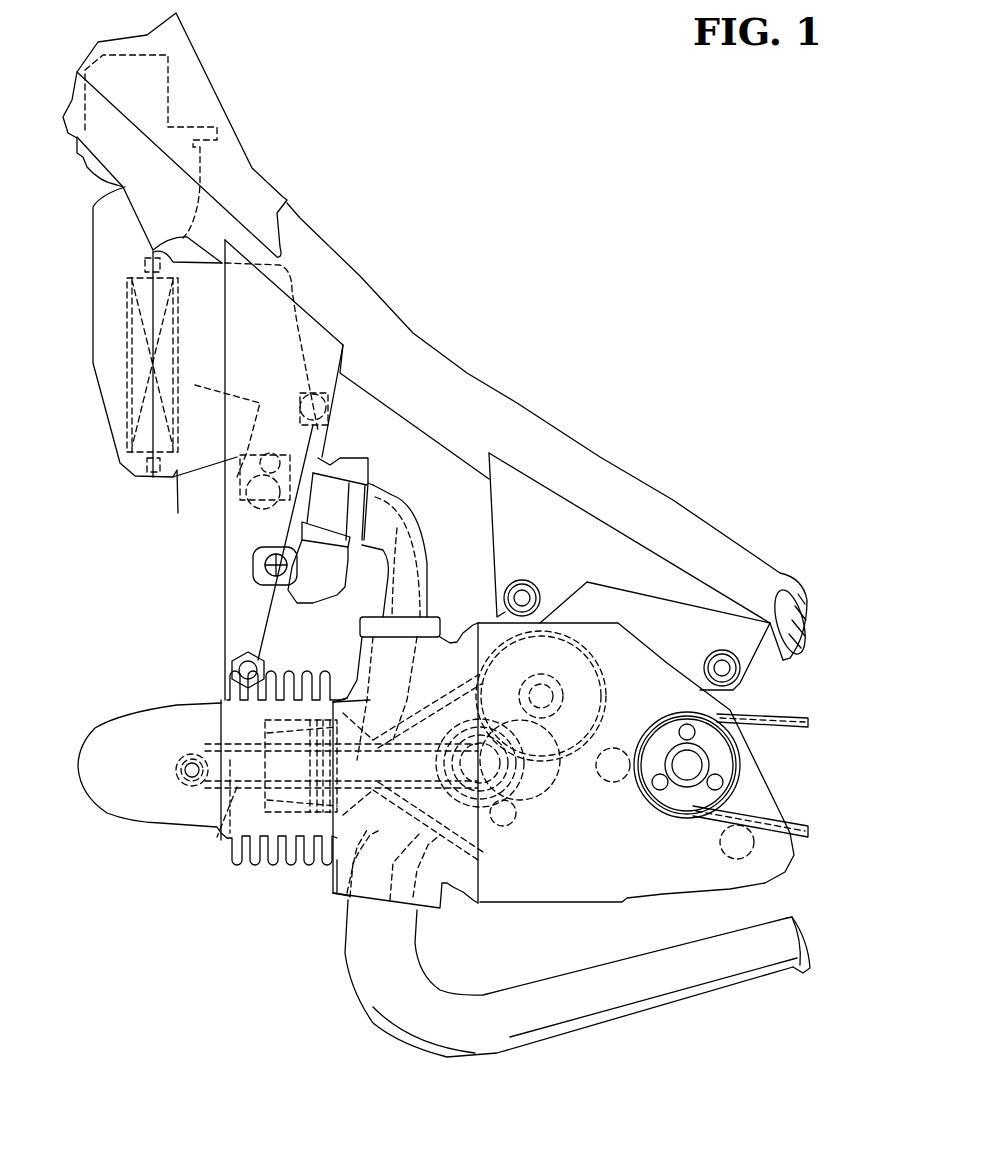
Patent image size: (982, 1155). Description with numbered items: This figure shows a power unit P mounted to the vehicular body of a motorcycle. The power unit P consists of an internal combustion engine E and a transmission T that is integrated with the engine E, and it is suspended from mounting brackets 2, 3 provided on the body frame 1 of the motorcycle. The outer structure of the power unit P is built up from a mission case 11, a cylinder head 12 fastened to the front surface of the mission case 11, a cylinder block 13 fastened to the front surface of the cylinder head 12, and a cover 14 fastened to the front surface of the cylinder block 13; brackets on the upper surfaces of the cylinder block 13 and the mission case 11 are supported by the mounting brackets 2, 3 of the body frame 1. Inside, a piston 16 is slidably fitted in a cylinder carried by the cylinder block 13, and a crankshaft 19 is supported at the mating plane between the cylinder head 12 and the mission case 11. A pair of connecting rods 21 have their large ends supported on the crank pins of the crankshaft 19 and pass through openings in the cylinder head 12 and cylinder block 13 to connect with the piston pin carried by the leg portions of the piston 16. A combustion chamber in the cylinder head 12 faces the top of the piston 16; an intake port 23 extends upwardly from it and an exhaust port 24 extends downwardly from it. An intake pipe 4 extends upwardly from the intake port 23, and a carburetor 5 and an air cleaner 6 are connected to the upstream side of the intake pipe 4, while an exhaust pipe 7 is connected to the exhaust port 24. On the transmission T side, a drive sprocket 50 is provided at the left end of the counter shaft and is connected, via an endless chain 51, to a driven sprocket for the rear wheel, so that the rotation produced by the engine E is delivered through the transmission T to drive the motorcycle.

The body frame 1 is at (413, 333).
The mounting bracket 2 is at (250, 635).
The mounting bracket 3 is at (620, 548).
The intake pipe 4 is at (418, 552).
The carburetor 5 is at (340, 455).
The air cleaner 6 is at (92, 396).
The exhaust pipe 7 is at (597, 1000).
The mission case 11 is at (628, 673).
The cylinder head 12 is at (457, 653).
The cylinder block 13 is at (237, 840).
The cover 14 is at (113, 812).
The piston 16 is at (267, 733).
The crankshaft 19 is at (563, 777).
The connecting rods 21 is at (217, 840).
The intake port 23 is at (363, 653).
The exhaust port 24 is at (413, 897).
The drive sprocket 50 is at (733, 767).
The endless chain 51 is at (780, 717).
The internal combustion engine E is at (291, 851).
The power unit P is at (337, 903).
The transmission T is at (607, 905).